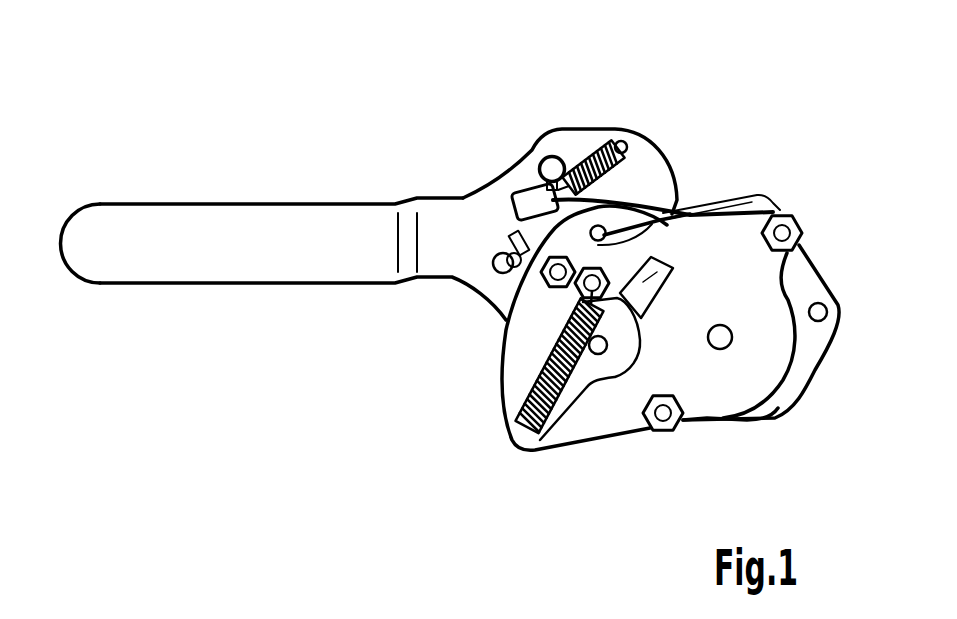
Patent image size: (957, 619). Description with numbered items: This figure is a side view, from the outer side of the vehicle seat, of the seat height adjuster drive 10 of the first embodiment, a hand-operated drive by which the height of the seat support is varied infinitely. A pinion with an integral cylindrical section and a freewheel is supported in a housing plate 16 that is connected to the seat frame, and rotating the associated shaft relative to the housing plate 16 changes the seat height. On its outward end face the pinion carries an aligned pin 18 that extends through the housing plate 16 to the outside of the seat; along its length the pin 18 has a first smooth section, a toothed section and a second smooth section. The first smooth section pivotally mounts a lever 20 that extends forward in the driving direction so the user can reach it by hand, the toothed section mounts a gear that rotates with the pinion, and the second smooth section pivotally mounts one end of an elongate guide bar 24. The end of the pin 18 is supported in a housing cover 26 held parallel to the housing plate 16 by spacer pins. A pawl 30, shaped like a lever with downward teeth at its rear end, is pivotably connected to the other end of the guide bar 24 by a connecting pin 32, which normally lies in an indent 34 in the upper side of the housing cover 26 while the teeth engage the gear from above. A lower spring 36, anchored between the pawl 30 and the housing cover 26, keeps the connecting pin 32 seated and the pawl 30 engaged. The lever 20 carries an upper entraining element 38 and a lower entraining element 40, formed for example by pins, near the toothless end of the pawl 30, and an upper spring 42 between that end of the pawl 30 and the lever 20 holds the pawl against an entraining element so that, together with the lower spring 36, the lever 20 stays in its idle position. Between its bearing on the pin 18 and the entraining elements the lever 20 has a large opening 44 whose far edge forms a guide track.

The seat height adjuster drive 10 is at (270, 128).
The housing plate 16 is at (797, 277).
The pin 18 is at (722, 337).
The lever 20 is at (270, 257).
The guide bar 24 is at (690, 238).
The housing cover 26 is at (597, 413).
The pawl 30 is at (527, 200).
The connecting pin 32 is at (604, 228).
The indent 34 is at (668, 268).
The lower spring 36 is at (537, 440).
The upper entraining element 38 is at (490, 250).
The lower entraining element 40 is at (538, 166).
The upper spring 42 is at (596, 147).
The large opening 44 is at (563, 393).